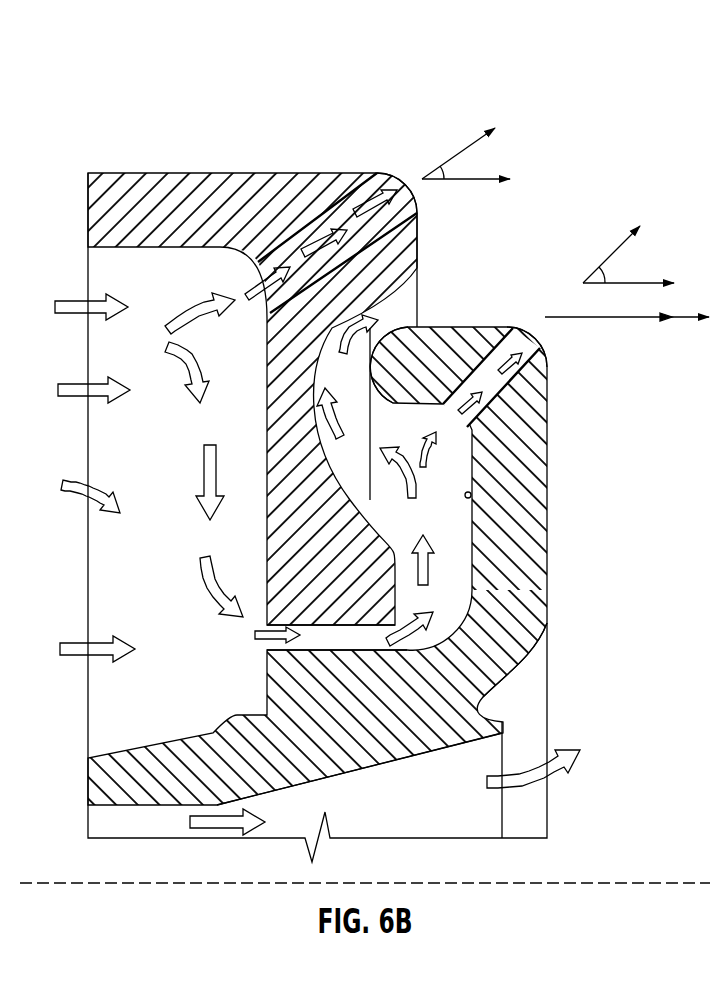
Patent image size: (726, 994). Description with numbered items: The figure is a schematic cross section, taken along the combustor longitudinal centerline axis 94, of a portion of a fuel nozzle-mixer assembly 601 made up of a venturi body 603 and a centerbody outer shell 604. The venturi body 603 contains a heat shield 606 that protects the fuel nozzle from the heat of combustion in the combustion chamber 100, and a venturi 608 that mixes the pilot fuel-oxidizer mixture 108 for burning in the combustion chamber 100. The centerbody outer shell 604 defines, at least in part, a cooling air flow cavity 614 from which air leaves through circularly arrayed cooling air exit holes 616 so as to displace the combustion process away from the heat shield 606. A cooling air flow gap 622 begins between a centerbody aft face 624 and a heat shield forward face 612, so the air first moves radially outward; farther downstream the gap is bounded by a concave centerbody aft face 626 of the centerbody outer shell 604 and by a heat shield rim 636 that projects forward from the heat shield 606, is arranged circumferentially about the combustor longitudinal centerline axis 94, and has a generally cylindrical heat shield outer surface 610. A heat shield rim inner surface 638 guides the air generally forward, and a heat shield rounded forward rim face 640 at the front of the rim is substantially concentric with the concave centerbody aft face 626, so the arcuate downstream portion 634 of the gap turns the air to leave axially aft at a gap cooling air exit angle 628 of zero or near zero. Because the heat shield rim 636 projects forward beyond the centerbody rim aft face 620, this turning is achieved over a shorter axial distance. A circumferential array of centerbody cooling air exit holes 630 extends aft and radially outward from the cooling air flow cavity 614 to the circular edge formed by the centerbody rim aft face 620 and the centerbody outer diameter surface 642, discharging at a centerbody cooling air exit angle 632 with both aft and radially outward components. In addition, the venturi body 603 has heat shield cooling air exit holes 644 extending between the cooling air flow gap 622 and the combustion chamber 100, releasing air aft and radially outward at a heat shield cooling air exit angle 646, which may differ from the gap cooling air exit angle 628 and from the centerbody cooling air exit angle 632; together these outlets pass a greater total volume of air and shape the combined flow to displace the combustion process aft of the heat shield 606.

The combustion chamber 100 is at (666, 479).
The pilot fuel-oxidizer mixture 108 is at (572, 768).
The combustor longitudinal centerline axis 94 is at (605, 882).
The fuel nozzle-mixer assembly 601 is at (618, 77).
The venturi body 603 is at (547, 615).
The centerbody outer shell 604 is at (128, 172).
The heat shield 606 is at (547, 525).
The venturi 608 is at (380, 764).
The heat shield outer surface 610 is at (445, 326).
The heat shield forward face 612 is at (471, 495).
The cooling air flow cavity 614 is at (146, 432).
The cooling air exit holes 616 is at (252, 630).
The centerbody rim aft face 620 is at (420, 225).
The cooling air flow gap 622 is at (395, 531).
The centerbody aft face 624 is at (400, 593).
The concave centerbody aft face 626 is at (420, 285).
The gap cooling air exit angle 628 is at (690, 320).
The centerbody cooling air exit holes 630 is at (400, 176).
The centerbody cooling air exit angle 632 is at (456, 170).
The downstream portion of the cooling air flow gap 634 is at (322, 386).
The heat shield rim 636 is at (462, 327).
The heat shield rim inner surface 638 is at (421, 406).
The heat shield rounded forward rim face 640 is at (386, 328).
The centerbody outer diameter surface 642 is at (322, 172).
The heat shield cooling air exit holes 644 is at (541, 337).
The heat shield cooling air exit angle 646 is at (612, 278).